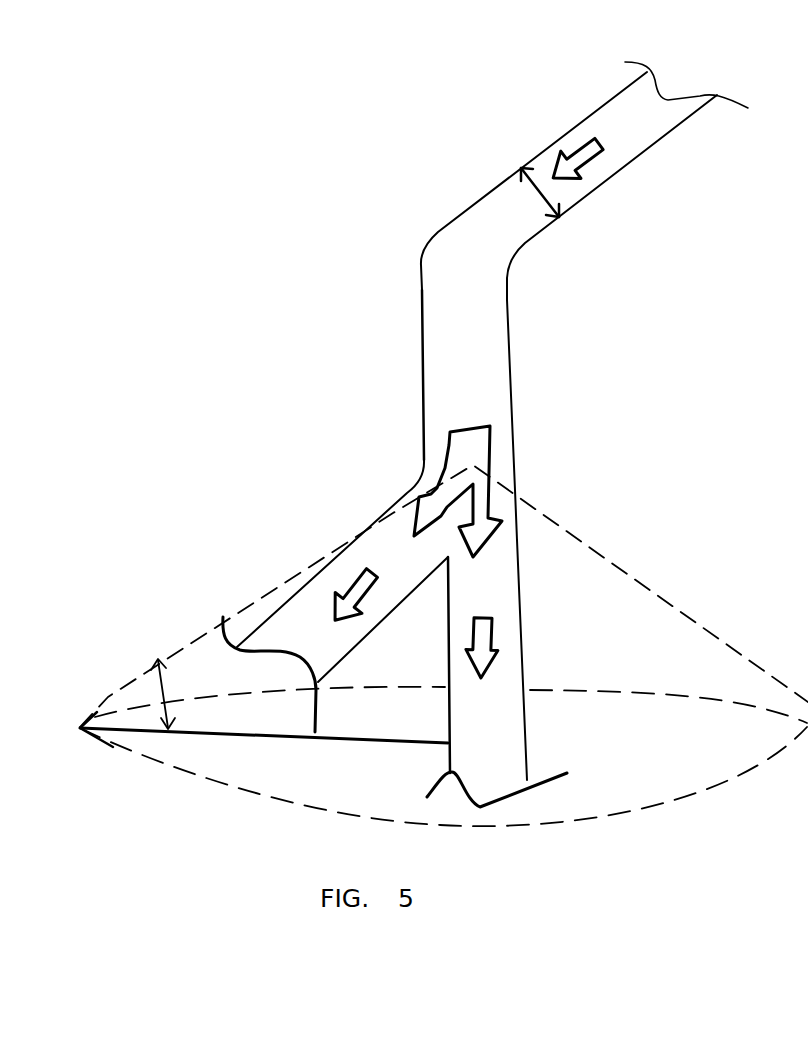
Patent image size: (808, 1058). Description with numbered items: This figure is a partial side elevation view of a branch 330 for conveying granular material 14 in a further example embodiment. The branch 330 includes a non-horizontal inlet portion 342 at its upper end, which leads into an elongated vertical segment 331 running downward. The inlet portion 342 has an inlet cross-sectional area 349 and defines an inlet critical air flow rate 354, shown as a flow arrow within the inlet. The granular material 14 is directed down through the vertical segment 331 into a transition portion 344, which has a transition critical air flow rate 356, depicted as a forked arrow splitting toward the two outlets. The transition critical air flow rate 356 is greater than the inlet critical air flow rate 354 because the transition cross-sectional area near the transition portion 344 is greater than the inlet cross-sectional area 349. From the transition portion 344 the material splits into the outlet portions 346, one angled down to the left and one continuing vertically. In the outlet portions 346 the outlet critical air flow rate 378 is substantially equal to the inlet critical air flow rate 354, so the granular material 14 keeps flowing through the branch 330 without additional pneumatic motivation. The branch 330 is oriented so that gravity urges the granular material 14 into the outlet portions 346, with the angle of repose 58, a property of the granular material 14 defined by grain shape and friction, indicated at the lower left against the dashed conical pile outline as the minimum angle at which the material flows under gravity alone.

The branch 330 is at (297, 60).
The granular material 14 is at (695, 76).
The inlet portion 342 is at (580, 120).
The inlet cross-sectional area 349 is at (547, 230).
The inlet critical air flow rate 354 is at (588, 167).
The elongated vertical segment 331 is at (507, 347).
The transition critical air flow rate 356 is at (474, 463).
The transition portion 344 is at (517, 490).
The outlet portions 346 is at (333, 555).
The outlet critical air flow rate 378 is at (377, 593).
The angle of repose 58 is at (172, 680).